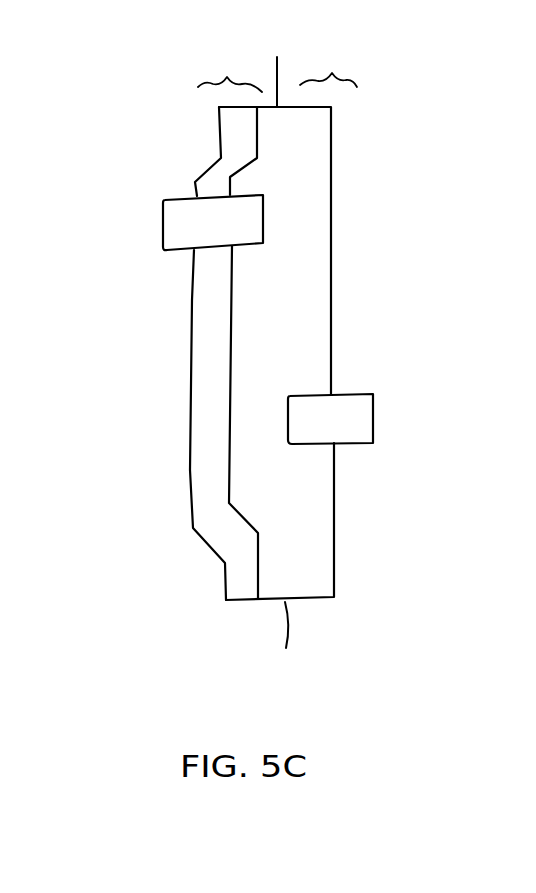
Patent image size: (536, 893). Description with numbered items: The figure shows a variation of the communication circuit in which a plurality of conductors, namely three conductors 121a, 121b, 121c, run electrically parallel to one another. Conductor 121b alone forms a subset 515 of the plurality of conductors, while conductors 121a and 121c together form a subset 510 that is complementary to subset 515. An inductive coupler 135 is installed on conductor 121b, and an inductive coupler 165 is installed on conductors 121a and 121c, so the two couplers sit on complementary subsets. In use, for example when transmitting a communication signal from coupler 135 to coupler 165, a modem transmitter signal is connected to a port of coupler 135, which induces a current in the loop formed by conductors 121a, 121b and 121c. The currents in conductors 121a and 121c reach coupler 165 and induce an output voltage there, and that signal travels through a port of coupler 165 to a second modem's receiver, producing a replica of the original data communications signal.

The conductor 121a is at (232, 317).
The conductor 121b is at (332, 312).
The conductor 121c is at (192, 423).
The inductive coupler 135 is at (360, 418).
The inductive coupler 165 is at (185, 215).
The subset 510 is at (230, 67).
The subset 515 is at (333, 63).